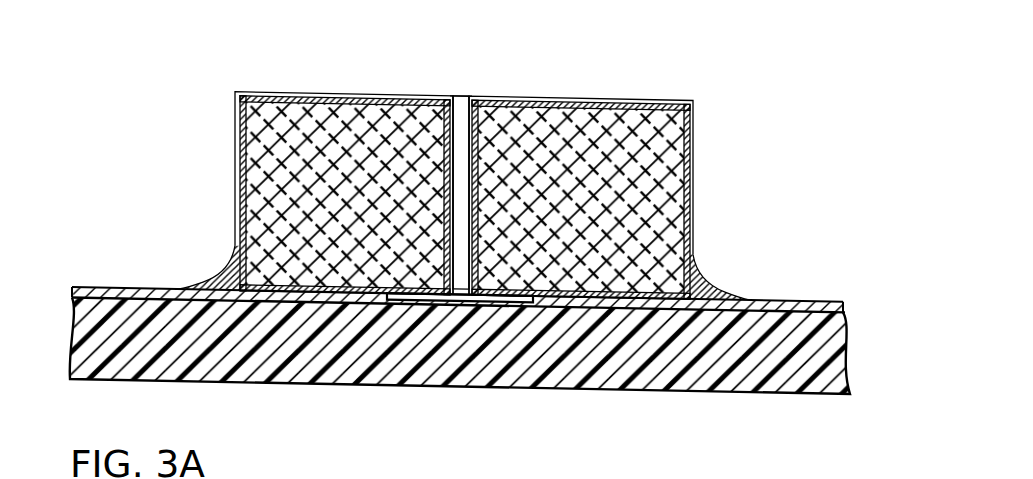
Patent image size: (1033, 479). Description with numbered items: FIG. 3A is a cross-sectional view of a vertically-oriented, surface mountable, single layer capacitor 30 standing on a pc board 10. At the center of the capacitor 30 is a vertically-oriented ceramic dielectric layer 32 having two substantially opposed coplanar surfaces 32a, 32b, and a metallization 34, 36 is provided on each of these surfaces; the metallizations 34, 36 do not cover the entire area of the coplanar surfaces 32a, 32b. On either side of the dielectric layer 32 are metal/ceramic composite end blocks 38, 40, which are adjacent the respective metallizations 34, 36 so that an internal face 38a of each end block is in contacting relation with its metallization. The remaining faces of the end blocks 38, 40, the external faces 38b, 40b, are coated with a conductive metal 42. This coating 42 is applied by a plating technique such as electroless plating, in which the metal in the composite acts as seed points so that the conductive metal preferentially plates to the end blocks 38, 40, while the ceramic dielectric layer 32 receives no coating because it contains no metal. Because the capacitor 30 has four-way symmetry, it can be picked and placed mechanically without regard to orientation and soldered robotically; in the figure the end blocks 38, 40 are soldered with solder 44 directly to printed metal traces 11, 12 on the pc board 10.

The pc board 10 is at (440, 385).
The printed metal trace 11 is at (102, 294).
The printed metal trace 12 is at (820, 294).
The single layer capacitor 30 is at (466, 222).
The ceramic dielectric layer 32 is at (467, 97).
The coplanar surface 32a is at (443, 112).
The coplanar surface 32b is at (495, 127).
The metallization 34 is at (440, 120).
The metallization 36 is at (492, 148).
The composite end block 38 is at (302, 241).
The internal face 38a is at (460, 96).
The external face 38b is at (252, 104).
The composite end block 40 is at (622, 243).
The external face 40b is at (640, 97).
The conductive metal coating 42 is at (693, 109).
The solder 44 is at (213, 272).